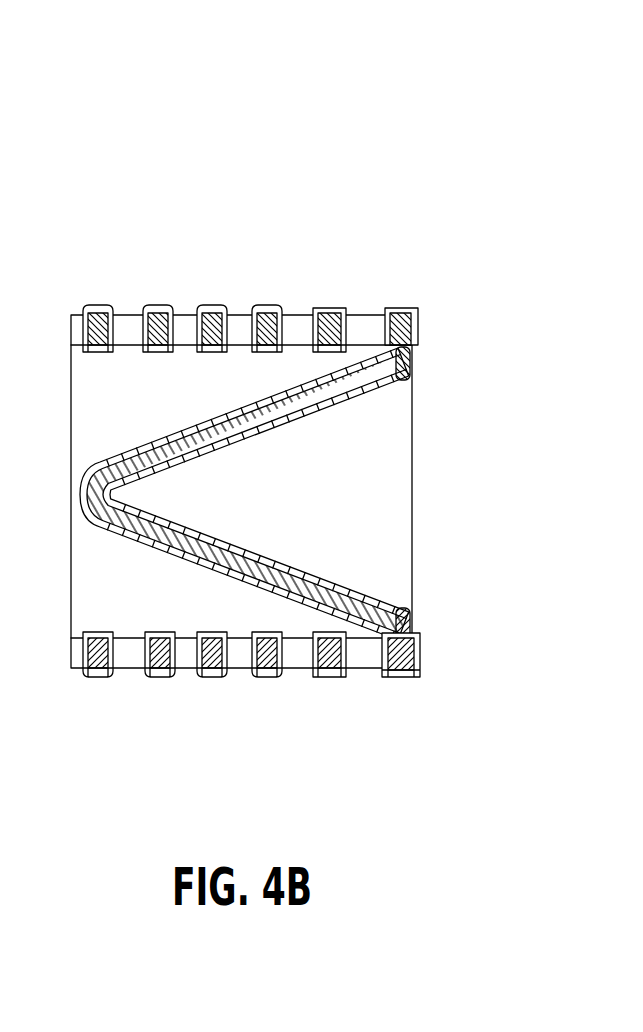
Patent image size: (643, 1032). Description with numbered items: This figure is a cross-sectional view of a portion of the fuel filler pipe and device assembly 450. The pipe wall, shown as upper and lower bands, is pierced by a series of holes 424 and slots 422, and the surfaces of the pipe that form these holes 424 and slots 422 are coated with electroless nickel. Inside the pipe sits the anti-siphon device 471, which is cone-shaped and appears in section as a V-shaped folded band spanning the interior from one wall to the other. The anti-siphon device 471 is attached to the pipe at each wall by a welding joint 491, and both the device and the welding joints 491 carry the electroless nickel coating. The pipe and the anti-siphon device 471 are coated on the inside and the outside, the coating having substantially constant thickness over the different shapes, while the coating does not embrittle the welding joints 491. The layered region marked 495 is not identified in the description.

The fuel filler pipe and device assembly 450 is at (512, 108).
The holes 424 is at (110, 314).
The slots 422 is at (348, 314).
The insulating layer 495 is at (217, 306).
The anti-siphon device 471 is at (315, 405).
The welding joint 491 is at (410, 360).